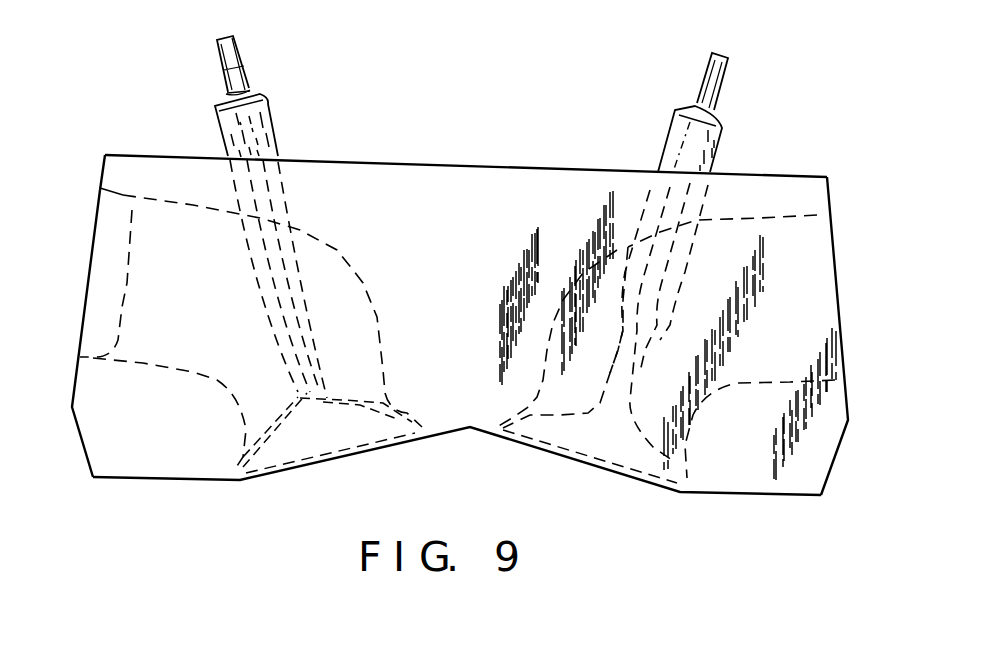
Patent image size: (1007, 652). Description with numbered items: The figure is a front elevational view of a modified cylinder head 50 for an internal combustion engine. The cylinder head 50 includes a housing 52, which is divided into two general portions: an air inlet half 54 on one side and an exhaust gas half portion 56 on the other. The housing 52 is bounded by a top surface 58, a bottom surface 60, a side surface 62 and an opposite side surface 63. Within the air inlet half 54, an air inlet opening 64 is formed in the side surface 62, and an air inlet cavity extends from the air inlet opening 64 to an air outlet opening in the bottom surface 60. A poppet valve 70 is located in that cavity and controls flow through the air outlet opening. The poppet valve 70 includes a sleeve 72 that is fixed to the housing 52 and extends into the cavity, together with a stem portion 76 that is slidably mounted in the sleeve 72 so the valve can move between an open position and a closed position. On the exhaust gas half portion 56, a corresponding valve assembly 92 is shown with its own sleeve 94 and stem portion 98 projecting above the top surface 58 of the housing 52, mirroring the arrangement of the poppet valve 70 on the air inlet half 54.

The cylinder head 50 is at (492, 92).
The housing 52 is at (408, 178).
The air inlet half 54 is at (157, 135).
The exhaust gas half portion 56 is at (773, 145).
The top surface 58 is at (535, 167).
The bottom surface 60 is at (170, 482).
The side surface 62 is at (830, 187).
The side surface 63 is at (102, 175).
The air inlet opening 64 is at (95, 336).
The poppet valve 70 is at (197, 63).
The sleeve 72 is at (260, 123).
The stem portion 76 is at (233, 65).
The second nipple assembly 92 is at (757, 75).
The second nipple base 94 is at (690, 127).
The second nipple tube 98 is at (710, 77).